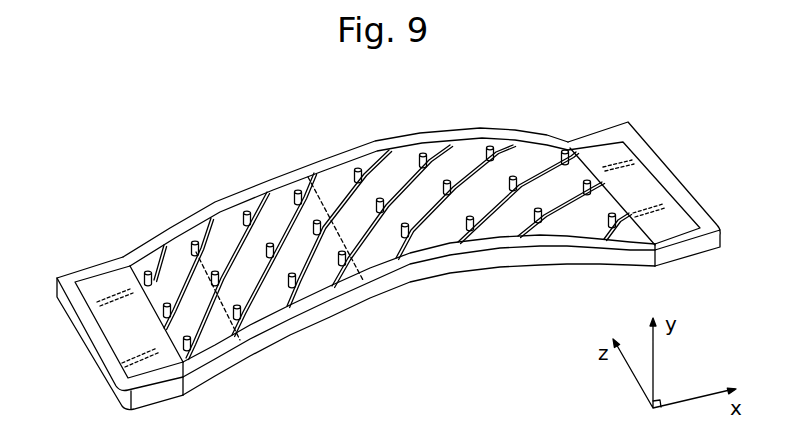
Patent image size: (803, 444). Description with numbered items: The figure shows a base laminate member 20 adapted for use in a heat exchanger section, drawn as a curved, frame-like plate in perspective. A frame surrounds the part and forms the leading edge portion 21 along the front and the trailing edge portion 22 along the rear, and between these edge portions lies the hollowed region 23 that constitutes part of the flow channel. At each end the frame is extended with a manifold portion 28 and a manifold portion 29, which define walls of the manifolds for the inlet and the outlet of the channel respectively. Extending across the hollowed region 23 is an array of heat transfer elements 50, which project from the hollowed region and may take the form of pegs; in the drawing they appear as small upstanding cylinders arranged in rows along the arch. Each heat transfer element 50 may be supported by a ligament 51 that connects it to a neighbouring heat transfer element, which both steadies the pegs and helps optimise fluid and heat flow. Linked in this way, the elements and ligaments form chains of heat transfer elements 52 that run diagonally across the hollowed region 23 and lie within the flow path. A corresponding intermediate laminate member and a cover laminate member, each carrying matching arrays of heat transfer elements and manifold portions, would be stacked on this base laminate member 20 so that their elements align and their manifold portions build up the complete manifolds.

The laminate member 20 is at (525, 255).
The leading edge portion 21 is at (385, 283).
The trailing edge portion 22 is at (460, 135).
The hollowed region 23 is at (577, 170).
The manifold portion 28 is at (698, 213).
The manifold portion 29 is at (117, 365).
The heat transfer element 50 is at (358, 170).
The ligament 51 is at (252, 210).
The chain of heat transfer elements 52 is at (282, 208).